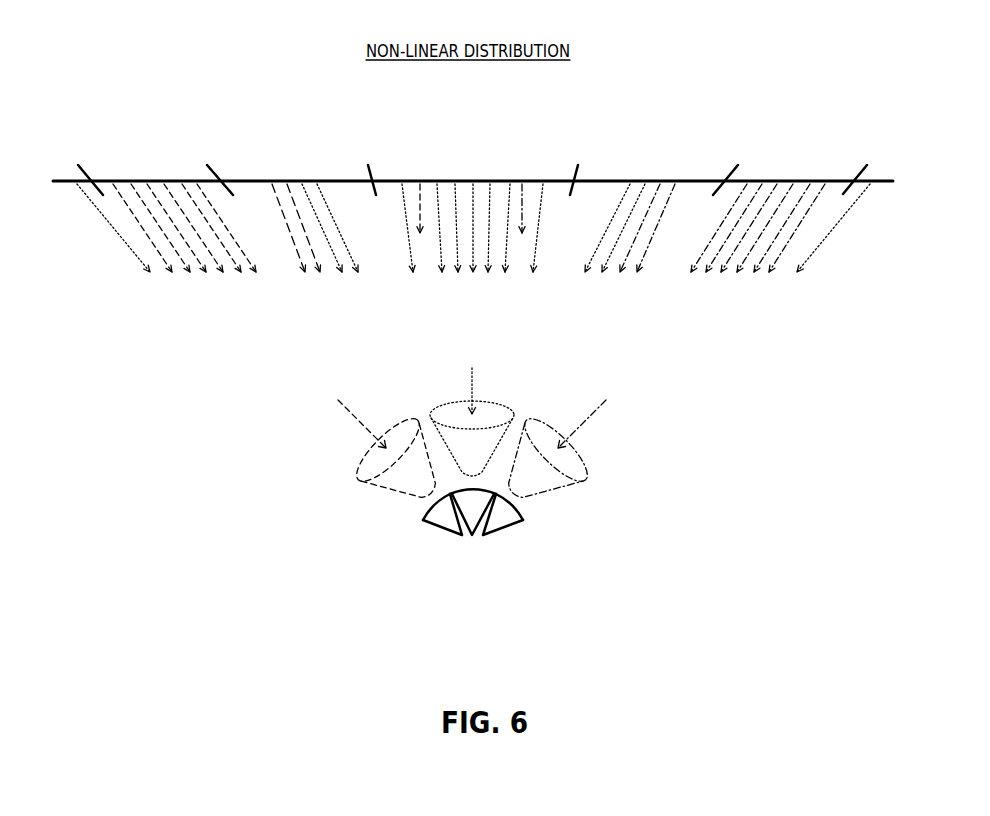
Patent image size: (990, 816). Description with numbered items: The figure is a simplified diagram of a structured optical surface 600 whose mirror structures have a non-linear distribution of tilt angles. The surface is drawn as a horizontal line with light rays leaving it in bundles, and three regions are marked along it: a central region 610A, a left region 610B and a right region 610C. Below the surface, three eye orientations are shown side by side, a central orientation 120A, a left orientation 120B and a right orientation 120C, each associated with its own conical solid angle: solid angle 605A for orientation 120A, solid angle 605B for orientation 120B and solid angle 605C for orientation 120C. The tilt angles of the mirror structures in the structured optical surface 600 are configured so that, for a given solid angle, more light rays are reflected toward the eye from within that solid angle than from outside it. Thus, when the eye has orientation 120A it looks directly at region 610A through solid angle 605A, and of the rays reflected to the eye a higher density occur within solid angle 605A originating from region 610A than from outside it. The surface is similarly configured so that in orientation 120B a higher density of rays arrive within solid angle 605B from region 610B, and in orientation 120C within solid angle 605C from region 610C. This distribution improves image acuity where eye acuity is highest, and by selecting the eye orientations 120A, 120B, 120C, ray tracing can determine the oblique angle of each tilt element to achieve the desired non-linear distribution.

The structured optical surface 600 is at (893, 180).
The region 610A is at (570, 158).
The region 610B is at (223, 158).
The region 610C is at (857, 158).
The solid angle 605A is at (508, 408).
The solid angle 605B is at (358, 478).
The solid angle 605C is at (588, 476).
The eye orientation 120A is at (472, 536).
The eye orientation 120B is at (445, 525).
The eye orientation 120C is at (500, 525).